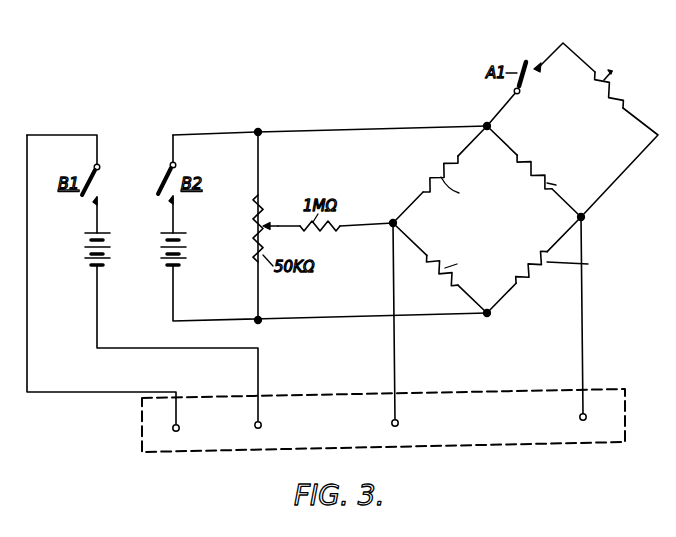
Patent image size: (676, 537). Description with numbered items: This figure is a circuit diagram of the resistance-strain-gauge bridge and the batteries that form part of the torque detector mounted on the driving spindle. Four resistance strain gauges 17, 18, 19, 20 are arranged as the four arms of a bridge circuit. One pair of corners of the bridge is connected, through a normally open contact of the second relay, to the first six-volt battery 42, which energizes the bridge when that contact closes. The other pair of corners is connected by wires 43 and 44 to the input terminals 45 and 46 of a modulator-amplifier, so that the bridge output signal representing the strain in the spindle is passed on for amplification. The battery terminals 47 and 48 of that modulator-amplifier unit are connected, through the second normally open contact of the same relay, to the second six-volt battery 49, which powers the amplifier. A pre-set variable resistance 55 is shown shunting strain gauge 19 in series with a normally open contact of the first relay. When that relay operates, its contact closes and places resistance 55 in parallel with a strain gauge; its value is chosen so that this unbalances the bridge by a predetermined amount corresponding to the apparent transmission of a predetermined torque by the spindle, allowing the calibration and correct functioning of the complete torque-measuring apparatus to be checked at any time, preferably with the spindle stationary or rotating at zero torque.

The strain gauge 17 is at (430, 185).
The strain gauge 18 is at (438, 275).
The strain gauge 19 is at (527, 161).
The strain gauge 20 is at (537, 268).
The 6-volt battery 42 is at (184, 244).
The wire 43 is at (394, 366).
The wire 44 is at (582, 362).
The input terminal 45 is at (392, 421).
The input terminal 46 is at (580, 415).
The battery terminal 47 is at (173, 426).
The battery terminal 48 is at (255, 424).
The 6-volt battery 49 is at (88, 243).
The pre-set variable resistance 55 is at (596, 73).